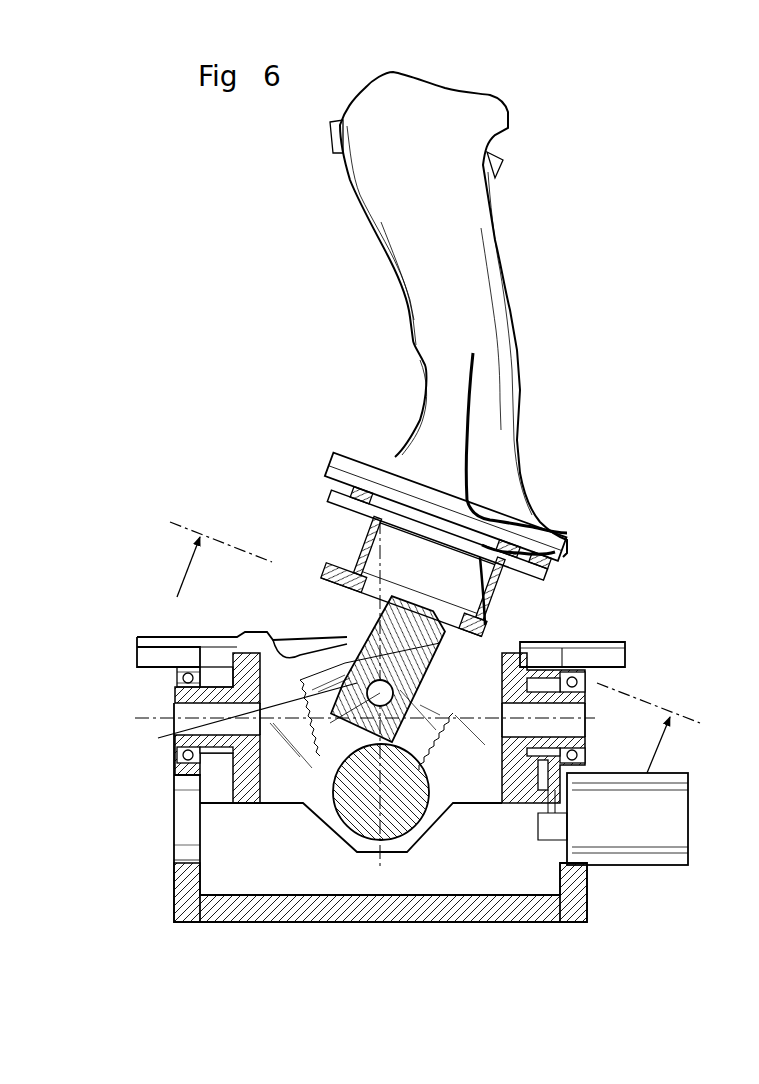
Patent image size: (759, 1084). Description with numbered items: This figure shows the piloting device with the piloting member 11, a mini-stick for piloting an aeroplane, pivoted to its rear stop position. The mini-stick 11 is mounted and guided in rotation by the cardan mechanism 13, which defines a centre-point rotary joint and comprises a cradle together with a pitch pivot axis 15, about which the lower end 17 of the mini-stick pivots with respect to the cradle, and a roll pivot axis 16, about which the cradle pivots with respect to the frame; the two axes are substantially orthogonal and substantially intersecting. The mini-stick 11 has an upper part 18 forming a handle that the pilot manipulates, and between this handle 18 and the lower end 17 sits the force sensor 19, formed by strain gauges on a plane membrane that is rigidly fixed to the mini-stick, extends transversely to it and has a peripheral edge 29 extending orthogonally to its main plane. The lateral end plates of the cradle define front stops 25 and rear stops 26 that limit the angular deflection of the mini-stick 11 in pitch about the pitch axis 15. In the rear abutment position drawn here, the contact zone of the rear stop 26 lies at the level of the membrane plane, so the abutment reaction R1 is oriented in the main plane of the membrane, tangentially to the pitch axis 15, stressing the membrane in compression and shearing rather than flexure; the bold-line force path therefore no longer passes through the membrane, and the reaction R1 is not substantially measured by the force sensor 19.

The piloting member 11 is at (340, 331).
The cardan mechanism 13 is at (160, 565).
The pitch pivot axis 15 is at (380, 693).
The roll pivot axis 16 is at (157, 718).
The lower end 17 is at (172, 730).
The upper part 18 is at (468, 268).
The force sensor 19 is at (373, 528).
The front stop 25 is at (297, 652).
The rear stop 26 is at (484, 625).
The peripheral edge 29 is at (330, 585).
The abutment reaction R1 is at (487, 622).